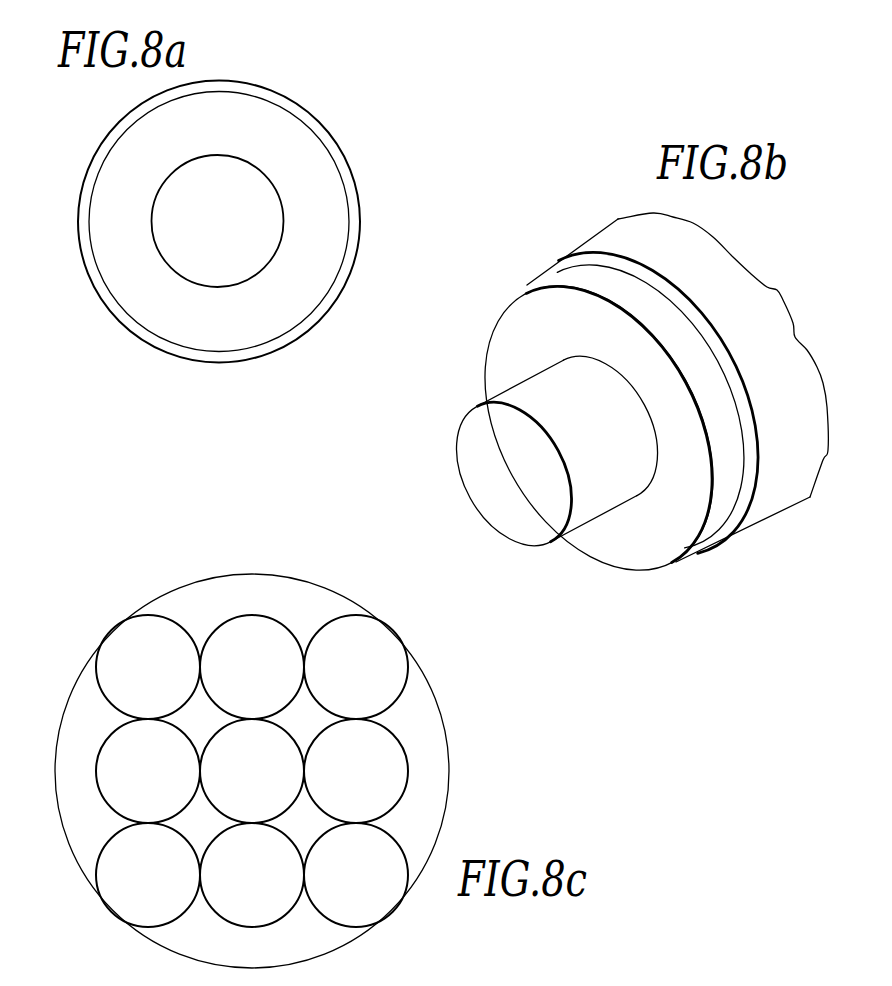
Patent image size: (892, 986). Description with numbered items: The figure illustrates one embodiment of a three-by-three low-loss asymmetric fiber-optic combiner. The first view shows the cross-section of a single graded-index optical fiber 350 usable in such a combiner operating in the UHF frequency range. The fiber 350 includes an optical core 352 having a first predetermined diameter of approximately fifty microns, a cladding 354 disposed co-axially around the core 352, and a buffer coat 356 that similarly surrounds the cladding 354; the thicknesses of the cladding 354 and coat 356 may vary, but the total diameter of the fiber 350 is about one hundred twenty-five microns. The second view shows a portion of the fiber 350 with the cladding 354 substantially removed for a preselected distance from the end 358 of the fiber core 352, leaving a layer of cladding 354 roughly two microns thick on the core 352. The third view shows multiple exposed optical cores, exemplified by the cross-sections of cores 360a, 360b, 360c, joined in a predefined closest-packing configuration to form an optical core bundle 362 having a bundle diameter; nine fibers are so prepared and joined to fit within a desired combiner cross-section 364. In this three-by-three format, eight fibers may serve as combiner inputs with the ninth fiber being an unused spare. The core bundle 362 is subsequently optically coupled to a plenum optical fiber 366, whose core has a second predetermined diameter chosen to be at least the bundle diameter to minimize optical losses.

In FIG. 8a, the fiber 350 is at (291, 80).
In FIG. 8b, the fiber 350 is at (770, 266).
In FIG. 8a, the optical core 352 is at (273, 205).
In FIG. 8b, the optical core 352 is at (534, 460).
In FIG. 8a, the cladding 354 is at (297, 135).
In FIG. 8b, the cladding 354 is at (653, 563).
In FIG. 8a, the buffer coat 356 is at (340, 163).
In FIG. 8b, the buffer coat 356 is at (730, 543).
In FIG. 8b, the end 358 is at (477, 480).
In FIG. 8c, the optical core bundle 362 is at (176, 579).
In FIG. 8c, the combiner cross-section 364 is at (435, 690).
In FIG. 8c, the core 360a is at (115, 640).
In FIG. 8c, the core 360b is at (113, 790).
In FIG. 8c, the core 360c is at (247, 628).
In FIG. 8c, the plenum optical fiber 366 is at (591, 980).